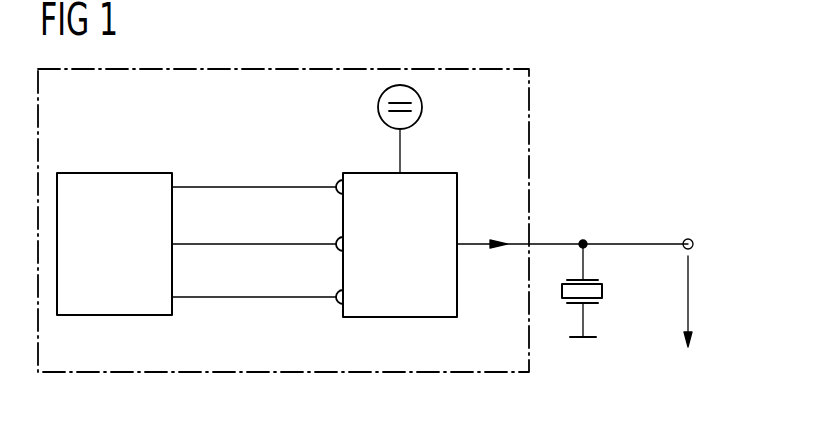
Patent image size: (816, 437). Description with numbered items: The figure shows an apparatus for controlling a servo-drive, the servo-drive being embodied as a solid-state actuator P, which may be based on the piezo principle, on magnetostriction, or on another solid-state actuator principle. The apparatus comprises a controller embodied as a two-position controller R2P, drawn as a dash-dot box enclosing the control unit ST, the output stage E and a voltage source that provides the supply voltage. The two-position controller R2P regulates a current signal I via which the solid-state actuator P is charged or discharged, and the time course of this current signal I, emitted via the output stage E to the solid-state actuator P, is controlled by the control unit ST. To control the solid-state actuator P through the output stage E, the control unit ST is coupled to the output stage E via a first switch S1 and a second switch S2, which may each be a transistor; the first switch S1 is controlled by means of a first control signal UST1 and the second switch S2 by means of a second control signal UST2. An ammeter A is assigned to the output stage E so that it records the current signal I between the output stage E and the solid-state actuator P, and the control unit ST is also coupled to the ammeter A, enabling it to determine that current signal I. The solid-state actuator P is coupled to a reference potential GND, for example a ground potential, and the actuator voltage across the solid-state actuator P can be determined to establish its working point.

The two-position controller R2P is at (531, 138).
The control unit ST is at (114, 244).
The first control signal UST1 is at (230, 186).
The second control signal UST2 is at (232, 246).
The first switch S1 is at (336, 192).
The second switch S2 is at (336, 250).
The ammeter A is at (337, 303).
The output stage E is at (400, 245).
The current signal I is at (496, 240).
The solid-state actuator P is at (603, 292).
The reference potential GND is at (583, 359).